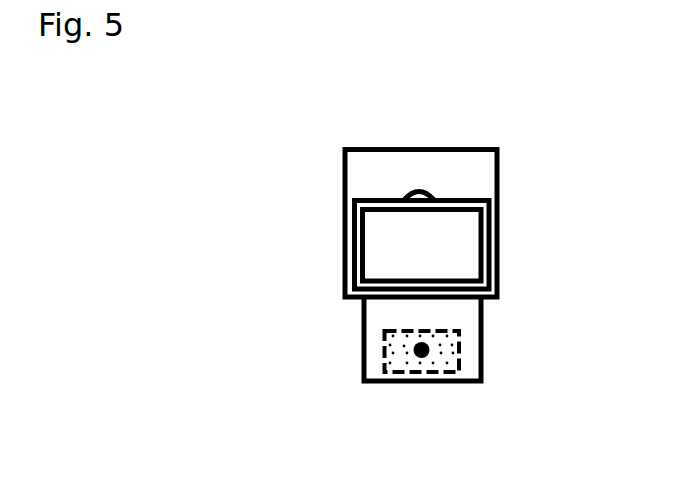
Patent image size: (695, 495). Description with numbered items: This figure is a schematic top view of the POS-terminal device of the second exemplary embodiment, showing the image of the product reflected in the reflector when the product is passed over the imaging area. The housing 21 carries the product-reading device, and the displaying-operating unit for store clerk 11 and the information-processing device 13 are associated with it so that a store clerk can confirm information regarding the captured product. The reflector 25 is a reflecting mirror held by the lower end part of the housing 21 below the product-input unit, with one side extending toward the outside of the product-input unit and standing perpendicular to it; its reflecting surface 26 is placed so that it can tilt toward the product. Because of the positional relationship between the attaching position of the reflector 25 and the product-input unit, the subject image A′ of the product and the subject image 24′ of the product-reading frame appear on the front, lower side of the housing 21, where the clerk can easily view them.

The displaying-operating unit for store clerk 11 is at (467, 268).
The information-processing device 13 is at (400, 198).
The housing 21 is at (483, 163).
The reflector 25 is at (363, 318).
The reflecting surface 26 is at (377, 356).
The subject image of the product-reading frame 24′ is at (458, 335).
The subject image of the product A′ is at (430, 352).